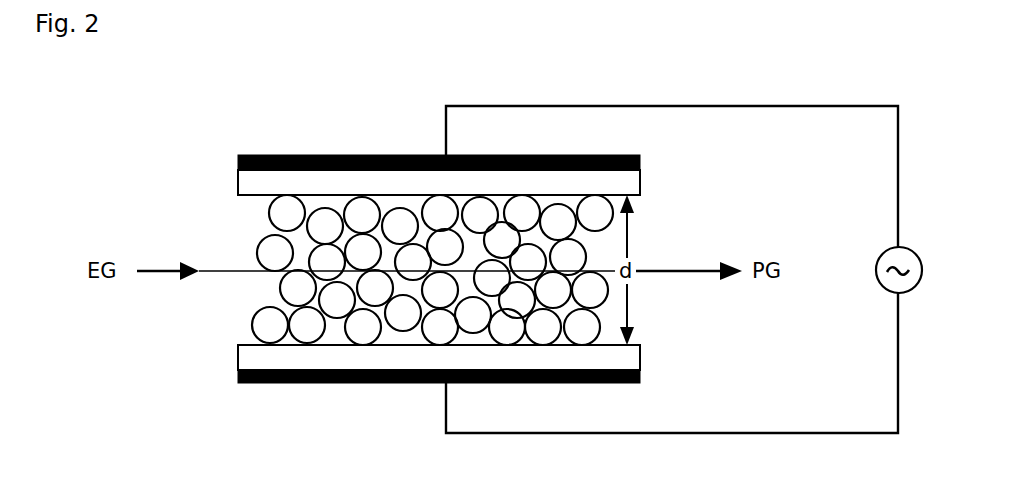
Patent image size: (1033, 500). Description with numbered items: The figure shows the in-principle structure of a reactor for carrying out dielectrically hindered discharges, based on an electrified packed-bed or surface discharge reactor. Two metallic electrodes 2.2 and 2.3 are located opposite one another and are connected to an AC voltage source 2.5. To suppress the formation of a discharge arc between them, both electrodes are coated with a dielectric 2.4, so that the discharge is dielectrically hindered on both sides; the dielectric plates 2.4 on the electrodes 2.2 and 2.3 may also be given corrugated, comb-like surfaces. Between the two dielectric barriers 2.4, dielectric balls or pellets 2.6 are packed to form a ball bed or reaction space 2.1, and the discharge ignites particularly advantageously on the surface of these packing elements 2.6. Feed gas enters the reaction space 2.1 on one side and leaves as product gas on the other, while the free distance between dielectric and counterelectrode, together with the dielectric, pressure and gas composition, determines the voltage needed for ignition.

The reaction bed or reaction space 2.1 is at (240, 218).
The electrode 2.2 is at (330, 156).
The electrode 2.3 is at (330, 383).
The dielectric 2.4 is at (610, 182).
The AC voltage source 2.5 is at (886, 283).
The dielectric balls or pellets 2.6 is at (280, 283).